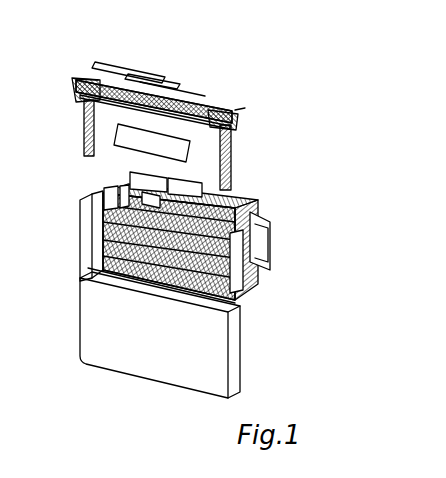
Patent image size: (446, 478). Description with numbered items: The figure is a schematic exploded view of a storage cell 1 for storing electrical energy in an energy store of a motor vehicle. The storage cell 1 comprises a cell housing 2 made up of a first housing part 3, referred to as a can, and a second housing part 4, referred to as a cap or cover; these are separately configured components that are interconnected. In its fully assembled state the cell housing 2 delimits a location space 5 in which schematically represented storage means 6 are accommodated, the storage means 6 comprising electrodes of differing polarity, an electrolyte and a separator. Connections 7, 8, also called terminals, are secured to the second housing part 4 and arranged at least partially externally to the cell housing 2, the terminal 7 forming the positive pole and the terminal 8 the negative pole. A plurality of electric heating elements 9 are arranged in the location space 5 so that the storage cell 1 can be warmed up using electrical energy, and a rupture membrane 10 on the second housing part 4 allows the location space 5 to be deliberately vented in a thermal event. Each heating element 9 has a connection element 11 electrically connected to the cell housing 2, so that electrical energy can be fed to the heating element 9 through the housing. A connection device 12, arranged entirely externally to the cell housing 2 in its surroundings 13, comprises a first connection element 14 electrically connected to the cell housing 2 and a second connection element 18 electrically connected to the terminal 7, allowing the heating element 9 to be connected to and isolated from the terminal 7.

The storage cell 1 is at (244, 97).
The cell housing 2 is at (82, 86).
The first housing part 3 is at (236, 345).
The second housing part 4 is at (185, 104).
The location space 5 is at (233, 307).
The storage means 6 is at (183, 153).
The connection 7 is at (80, 92).
The connection 8 is at (236, 105).
The electric heating element 9 is at (268, 232).
The rupture membrane 10 is at (183, 88).
The connection element 11 is at (103, 193).
The connection device 12 is at (134, 74).
The surroundings 13 is at (359, 125).
The first connection element 14 is at (153, 83).
The second connection element 18 is at (98, 62).